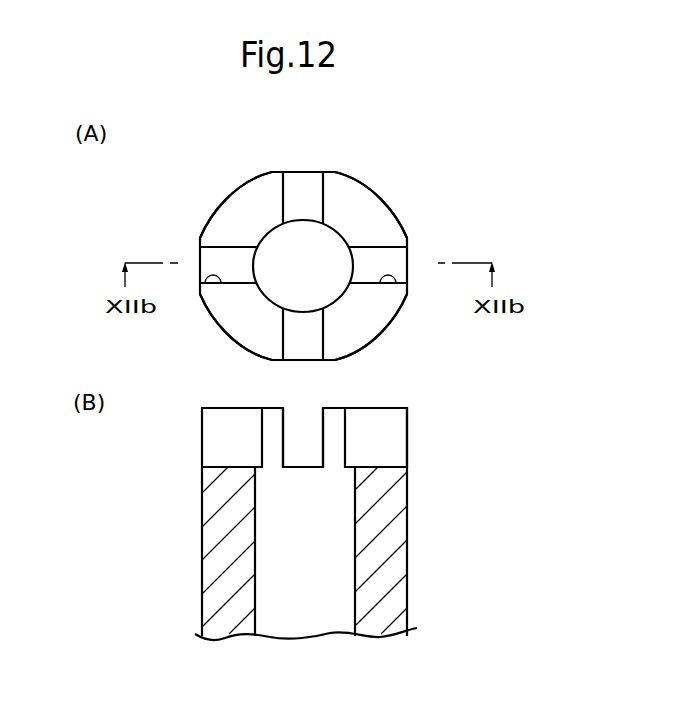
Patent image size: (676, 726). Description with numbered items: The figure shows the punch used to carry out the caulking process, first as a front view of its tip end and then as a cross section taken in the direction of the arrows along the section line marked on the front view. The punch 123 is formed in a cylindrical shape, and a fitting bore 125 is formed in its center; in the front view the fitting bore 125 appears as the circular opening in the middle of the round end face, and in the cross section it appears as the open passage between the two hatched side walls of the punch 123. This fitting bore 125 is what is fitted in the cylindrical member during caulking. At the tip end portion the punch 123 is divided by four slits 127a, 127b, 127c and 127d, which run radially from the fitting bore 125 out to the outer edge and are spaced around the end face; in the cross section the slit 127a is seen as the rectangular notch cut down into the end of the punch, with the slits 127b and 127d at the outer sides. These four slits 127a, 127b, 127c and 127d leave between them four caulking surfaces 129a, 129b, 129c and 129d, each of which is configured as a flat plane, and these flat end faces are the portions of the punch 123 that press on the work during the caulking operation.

In FIG. 12A, the punch 123 is at (362, 178).
In FIG. 12B, the punch 123 is at (417, 557).
In FIG. 12A, the fitting bore 125 is at (352, 262).
In FIG. 12B, the fitting bore 125 is at (355, 602).
In FIG. 12B, the slit 127a is at (322, 440).
In FIG. 12A, the slit 127b is at (407, 293).
In FIG. 12B, the slit 127b is at (390, 437).
In FIG. 12A, the slit 127c is at (323, 336).
In FIG. 12A, the slit 127d is at (200, 293).
In FIG. 12B, the slit 127d is at (213, 451).
In FIG. 12A, the caulking surface 129a is at (323, 188).
In FIG. 12B, the caulking surface 129a is at (335, 408).
In FIG. 12A, the caulking surface 129b is at (346, 301).
In FIG. 12A, the caulking surface 129c is at (260, 302).
In FIG. 12A, the caulking surface 129d is at (263, 232).
In FIG. 12B, the caulking surface 129d is at (279, 408).